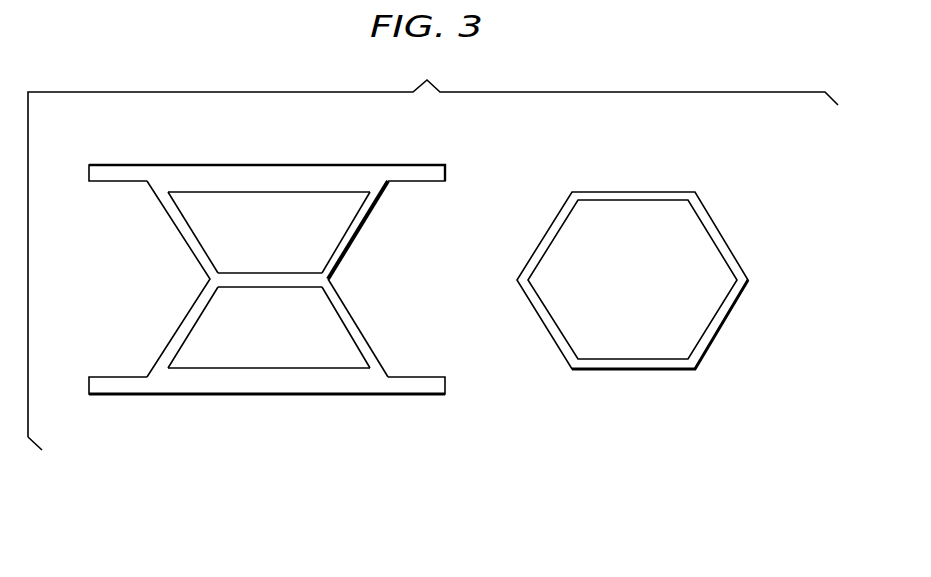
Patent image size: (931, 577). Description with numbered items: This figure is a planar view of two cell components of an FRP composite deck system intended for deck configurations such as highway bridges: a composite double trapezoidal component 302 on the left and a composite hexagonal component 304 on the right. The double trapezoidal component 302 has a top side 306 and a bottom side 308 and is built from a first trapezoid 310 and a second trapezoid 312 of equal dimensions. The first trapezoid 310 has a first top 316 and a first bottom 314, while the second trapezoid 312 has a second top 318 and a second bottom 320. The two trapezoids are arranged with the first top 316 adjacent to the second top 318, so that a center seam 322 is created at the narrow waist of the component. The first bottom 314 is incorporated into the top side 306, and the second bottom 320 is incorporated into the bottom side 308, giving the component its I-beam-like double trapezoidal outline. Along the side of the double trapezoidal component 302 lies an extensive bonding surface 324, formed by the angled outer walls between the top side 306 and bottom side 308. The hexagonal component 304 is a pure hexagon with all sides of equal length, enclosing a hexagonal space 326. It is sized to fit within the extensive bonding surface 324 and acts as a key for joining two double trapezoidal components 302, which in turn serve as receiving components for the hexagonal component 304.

The double trapezoidal component 302 is at (236, 166).
The hexagonal component 304 is at (632, 192).
The top side 306 is at (191, 173).
The bottom side 308 is at (158, 388).
The first trapezoid 310 is at (278, 200).
The second trapezoid 312 is at (240, 357).
The first bottom 314 is at (290, 192).
The first top 316 is at (228, 270).
The second top 318 is at (233, 288).
The second bottom 320 is at (293, 367).
The center seam 322 is at (277, 280).
The extensive bonding surface 324 is at (410, 183).
The hexagonal space 326 is at (700, 245).